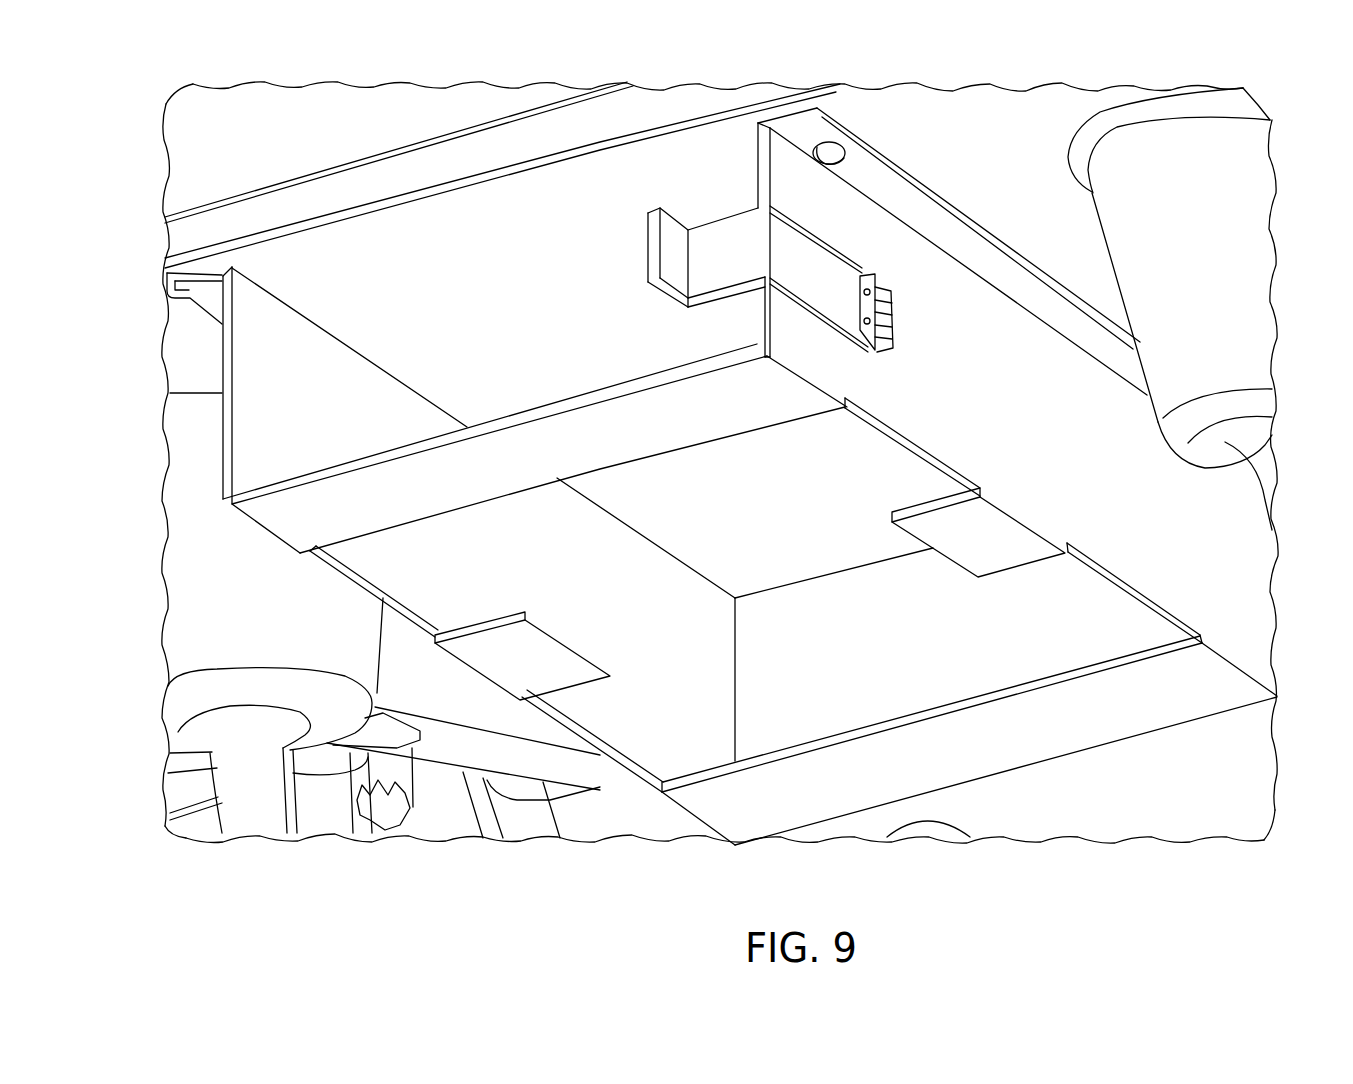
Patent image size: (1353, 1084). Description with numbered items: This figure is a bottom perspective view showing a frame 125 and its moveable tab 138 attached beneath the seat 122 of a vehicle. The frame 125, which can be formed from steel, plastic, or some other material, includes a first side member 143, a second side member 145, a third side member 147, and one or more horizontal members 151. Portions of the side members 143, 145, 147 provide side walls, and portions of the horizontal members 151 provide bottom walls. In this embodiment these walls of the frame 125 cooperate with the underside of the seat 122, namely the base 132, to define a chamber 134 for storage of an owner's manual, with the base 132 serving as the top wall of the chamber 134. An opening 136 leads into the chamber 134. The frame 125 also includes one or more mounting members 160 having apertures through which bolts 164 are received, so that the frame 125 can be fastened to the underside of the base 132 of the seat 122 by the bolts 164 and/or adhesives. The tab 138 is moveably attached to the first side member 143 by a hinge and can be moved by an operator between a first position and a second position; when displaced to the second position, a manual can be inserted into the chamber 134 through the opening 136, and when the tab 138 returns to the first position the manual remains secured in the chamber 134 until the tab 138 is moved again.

The seat 122 is at (128, 168).
The frame 125 is at (1227, 527).
The base 132 is at (1000, 150).
The chamber 134 is at (657, 743).
The opening 136 is at (367, 253).
The tab 138 is at (722, 247).
The first side member 143 is at (923, 427).
The second side member 145 is at (630, 557).
The third side member 147 is at (800, 603).
The horizontal member 151 is at (545, 437).
The mounting member 160 is at (1022, 284).
The bolt 164 is at (840, 152).